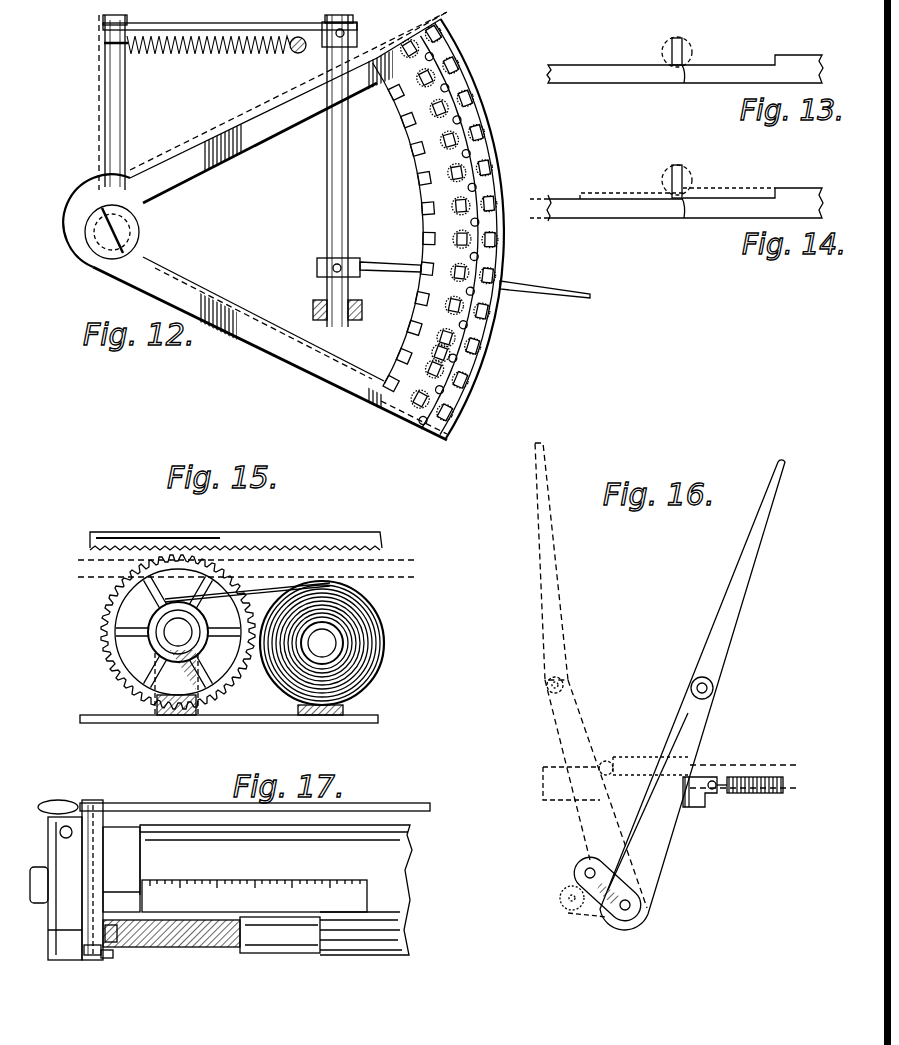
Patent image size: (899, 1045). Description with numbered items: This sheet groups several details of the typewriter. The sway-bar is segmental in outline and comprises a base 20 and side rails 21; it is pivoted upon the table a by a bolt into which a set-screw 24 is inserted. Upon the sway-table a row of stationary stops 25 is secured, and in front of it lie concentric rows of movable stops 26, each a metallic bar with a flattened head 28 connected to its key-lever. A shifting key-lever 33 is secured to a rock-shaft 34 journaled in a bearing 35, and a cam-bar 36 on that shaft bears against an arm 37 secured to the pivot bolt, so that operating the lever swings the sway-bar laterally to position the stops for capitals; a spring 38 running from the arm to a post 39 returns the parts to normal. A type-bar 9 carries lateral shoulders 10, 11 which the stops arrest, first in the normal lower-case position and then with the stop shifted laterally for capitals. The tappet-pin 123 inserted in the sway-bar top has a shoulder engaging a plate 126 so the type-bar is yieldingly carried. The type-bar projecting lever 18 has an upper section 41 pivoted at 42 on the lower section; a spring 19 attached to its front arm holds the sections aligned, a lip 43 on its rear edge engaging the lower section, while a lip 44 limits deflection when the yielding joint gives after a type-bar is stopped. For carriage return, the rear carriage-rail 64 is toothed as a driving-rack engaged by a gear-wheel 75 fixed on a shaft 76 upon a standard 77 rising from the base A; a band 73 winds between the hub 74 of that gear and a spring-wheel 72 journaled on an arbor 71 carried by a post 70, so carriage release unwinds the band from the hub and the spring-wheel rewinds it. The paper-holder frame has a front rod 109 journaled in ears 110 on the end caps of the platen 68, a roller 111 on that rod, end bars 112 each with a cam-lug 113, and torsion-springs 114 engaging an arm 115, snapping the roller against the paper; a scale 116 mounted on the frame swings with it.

In FIG. 13, the type-bar 9 is at (615, 86).
In FIG. 14, the type-bar 9 is at (606, 217).
In FIG. 13, the lateral shoulder 10 is at (683, 85).
In FIG. 14, the lateral shoulder 10 is at (683, 219).
In FIG. 13, the lateral shoulder 11 is at (753, 60).
In FIG. 14, the lateral shoulder 11 is at (753, 194).
In FIG. 16, the lever 18 is at (672, 822).
In FIG. 16, the spring 19 is at (706, 791).
In FIG. 12, the base 20 is at (133, 232).
In FIG. 12, the side rails 21 is at (270, 226).
In FIG. 12, the set-screw 24 is at (85, 220).
In FIG. 12, the stationary stops 25 is at (408, 147).
In FIG. 12, the movable stops 26 is at (479, 74).
In FIG. 12, the flattened head 28 is at (476, 62).
In FIG. 13, the flattened head 28 is at (677, 41).
In FIG. 14, the flattened head 28 is at (677, 170).
In FIG. 12, the key-lever 33 is at (369, 261).
In FIG. 12, the rock-shaft 34 is at (456, 225).
In FIG. 12, the bearing 35 is at (351, 310).
In FIG. 12, the cam-bar 36 is at (230, 15).
In FIG. 12, the arm 37 is at (124, 102).
In FIG. 12, the spring 38 is at (197, 58).
In FIG. 12, the post 39 is at (291, 60).
In FIG. 16, the upper section 41 is at (660, 686).
In FIG. 16, the pivot 42 is at (563, 685).
In FIG. 16, the lip 43 is at (652, 780).
In FIG. 16, the lip 44 is at (717, 814).
In FIG. 15, the carriage-rail 64 is at (236, 531).
In FIG. 17, the platen 68 is at (257, 890).
In FIG. 15, the post 70 is at (229, 725).
In FIG. 15, the arbor 71 is at (322, 643).
In FIG. 15, the spring-wheel 72 is at (358, 644).
In FIG. 15, the cord or band 73 is at (329, 643).
In FIG. 15, the hub 74 is at (247, 592).
In FIG. 15, the gear-wheel 75 is at (158, 632).
In FIG. 15, the shaft 76 is at (178, 632).
In FIG. 15, the standard 77 is at (176, 698).
In FIG. 17, the front rod 109 is at (128, 955).
In FIG. 17, the ears 110 is at (84, 962).
In FIG. 17, the roller 111 is at (280, 949).
In FIG. 17, the end bars 112 is at (234, 871).
In FIG. 17, the cam-lug 113 is at (94, 968).
In FIG. 17, the torsion-springs 114 is at (200, 950).
In FIG. 17, the arm 115 is at (108, 972).
In FIG. 17, the scale 116 is at (254, 897).
In FIG. 12, the tappet-pin 123 is at (462, 357).
In FIG. 12, the plate 126 is at (457, 359).
In FIG. 15, the table a is at (257, 573).
In FIG. 15, the base A is at (396, 714).